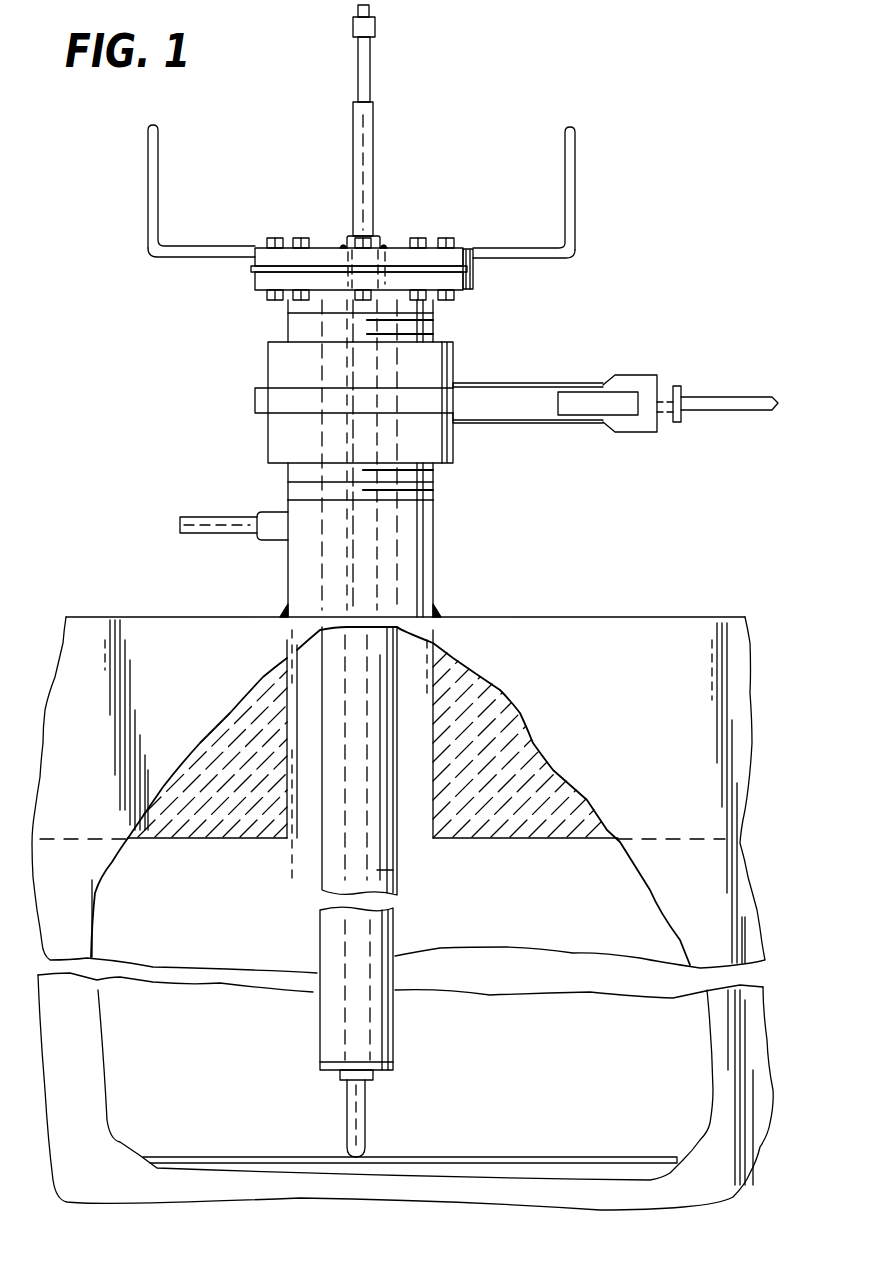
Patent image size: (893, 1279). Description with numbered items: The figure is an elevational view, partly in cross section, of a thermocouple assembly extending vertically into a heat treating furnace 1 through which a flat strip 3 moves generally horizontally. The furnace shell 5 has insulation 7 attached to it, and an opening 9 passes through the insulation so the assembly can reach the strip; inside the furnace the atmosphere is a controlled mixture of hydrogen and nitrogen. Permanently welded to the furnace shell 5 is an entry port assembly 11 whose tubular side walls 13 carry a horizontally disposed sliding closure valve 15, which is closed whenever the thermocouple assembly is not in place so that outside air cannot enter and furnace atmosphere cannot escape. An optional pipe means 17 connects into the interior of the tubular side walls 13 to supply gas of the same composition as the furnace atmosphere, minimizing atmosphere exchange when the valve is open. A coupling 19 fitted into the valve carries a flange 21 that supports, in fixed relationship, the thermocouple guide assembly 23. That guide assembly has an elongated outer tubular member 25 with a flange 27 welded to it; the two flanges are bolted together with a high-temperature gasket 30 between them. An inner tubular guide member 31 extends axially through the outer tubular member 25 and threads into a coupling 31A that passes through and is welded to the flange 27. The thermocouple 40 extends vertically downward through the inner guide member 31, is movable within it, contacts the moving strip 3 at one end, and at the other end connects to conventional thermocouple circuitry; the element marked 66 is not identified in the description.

The heat treating furnace 1 is at (148, 613).
The flat strip 3 is at (535, 1157).
The furnace shell 5 is at (603, 615).
The insulation 7 is at (547, 763).
The opening 9 is at (303, 830).
The entry port assembly 11 is at (448, 548).
The tubular side walls 13 is at (435, 567).
The sliding closure valve 15 is at (682, 366).
The pipe means 17 is at (218, 522).
The coupling 19 is at (432, 328).
The flange 21 is at (473, 282).
The thermocouple guide assembly 23 is at (590, 200).
The elongated outer tubular member 25 is at (395, 1045).
The flange 27 is at (465, 250).
The high-temperature gasket 30 is at (254, 268).
The inner tubular guide member 31 is at (403, 877).
The coupling 31A is at (347, 238).
The thermocouple 40 is at (390, 147).
The cap 66 is at (375, 25).